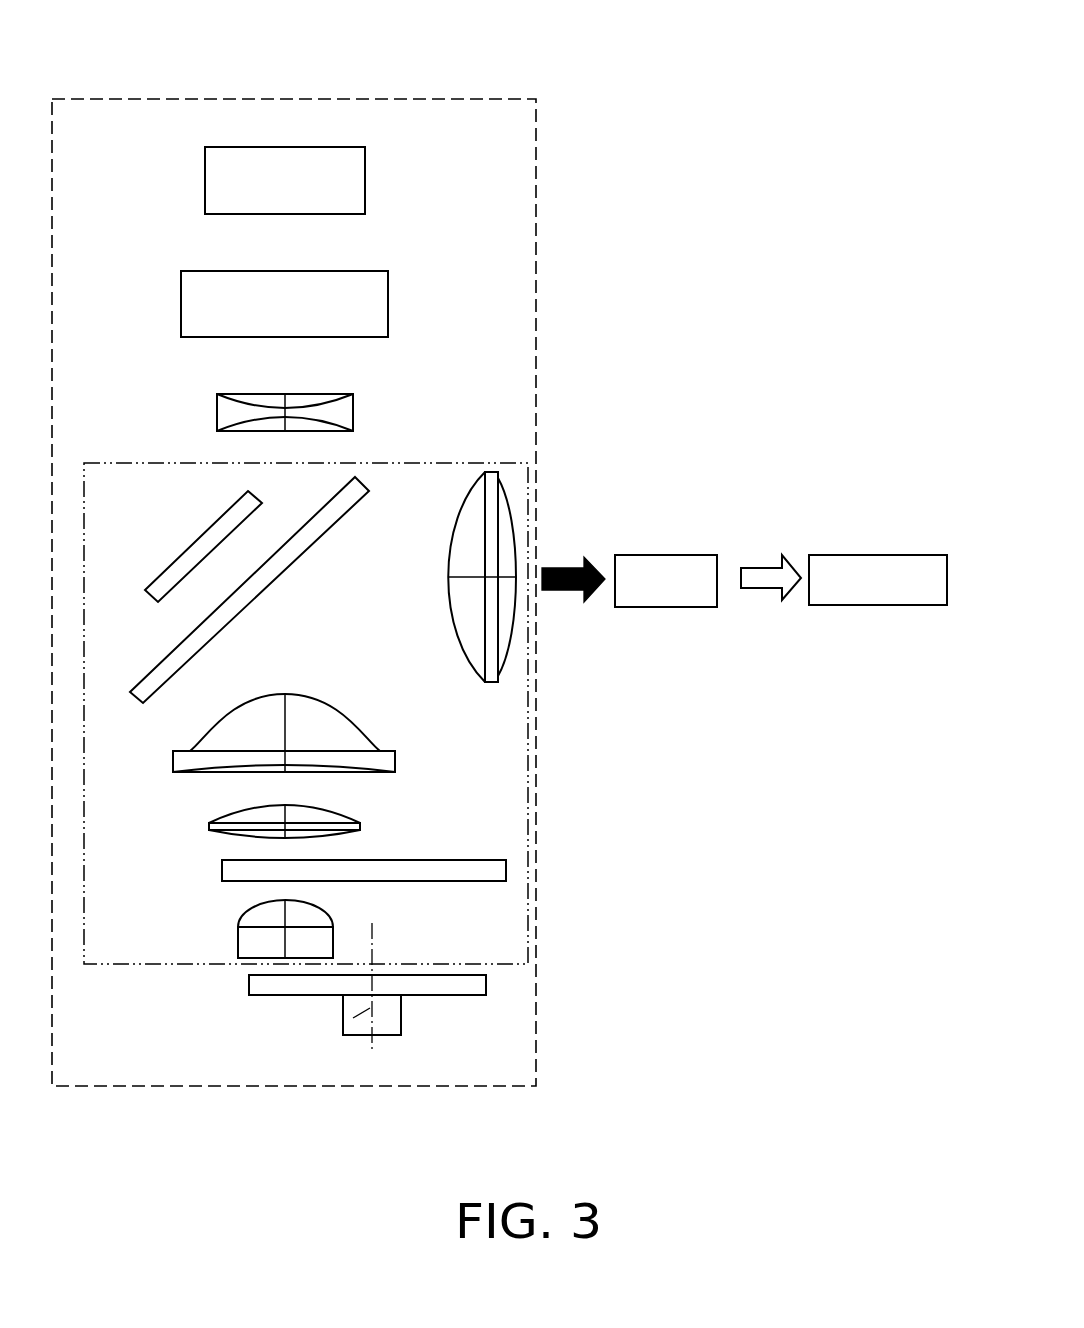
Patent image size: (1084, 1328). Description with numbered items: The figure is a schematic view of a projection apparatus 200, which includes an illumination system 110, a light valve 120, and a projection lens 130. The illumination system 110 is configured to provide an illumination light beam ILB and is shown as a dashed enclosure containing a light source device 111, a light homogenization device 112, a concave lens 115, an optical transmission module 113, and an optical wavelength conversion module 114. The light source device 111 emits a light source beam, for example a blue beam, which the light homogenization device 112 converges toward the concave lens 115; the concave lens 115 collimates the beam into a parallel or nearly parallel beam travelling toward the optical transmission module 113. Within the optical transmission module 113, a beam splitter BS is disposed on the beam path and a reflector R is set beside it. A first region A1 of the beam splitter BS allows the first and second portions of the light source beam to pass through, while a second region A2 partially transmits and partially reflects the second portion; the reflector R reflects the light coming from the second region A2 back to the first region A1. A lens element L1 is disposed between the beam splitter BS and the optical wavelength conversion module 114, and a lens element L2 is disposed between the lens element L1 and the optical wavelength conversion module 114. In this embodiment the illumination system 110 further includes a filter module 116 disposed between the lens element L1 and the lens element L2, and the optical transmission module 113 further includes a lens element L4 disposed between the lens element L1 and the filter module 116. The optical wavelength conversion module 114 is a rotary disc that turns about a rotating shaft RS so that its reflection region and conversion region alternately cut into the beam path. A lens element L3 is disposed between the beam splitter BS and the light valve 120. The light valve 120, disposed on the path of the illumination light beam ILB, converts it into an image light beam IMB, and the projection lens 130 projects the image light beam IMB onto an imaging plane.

The projection apparatus 200 is at (912, 1172).
The illumination system 110 is at (460, 99).
The light source device 111 is at (205, 174).
The light homogenization device 112 is at (181, 298).
The optical transmission module 113 is at (122, 964).
The optical wavelength conversion module 114 is at (249, 985).
The concave lens 115 is at (217, 410).
The filter module 116 is at (222, 868).
The light valve 120 is at (655, 555).
The projection lens 130 is at (888, 555).
The reflector R is at (192, 550).
The beam splitter BS is at (180, 652).
The first region A1 is at (358, 490).
The second region A2 is at (134, 688).
The lens element L1 is at (203, 737).
The lens element L2 is at (238, 938).
The lens element L3 is at (480, 676).
The lens element L4 is at (209, 818).
The rotating shaft RS is at (342, 1024).
The illumination light beam ILB is at (562, 567).
The image light beam IMB is at (760, 566).